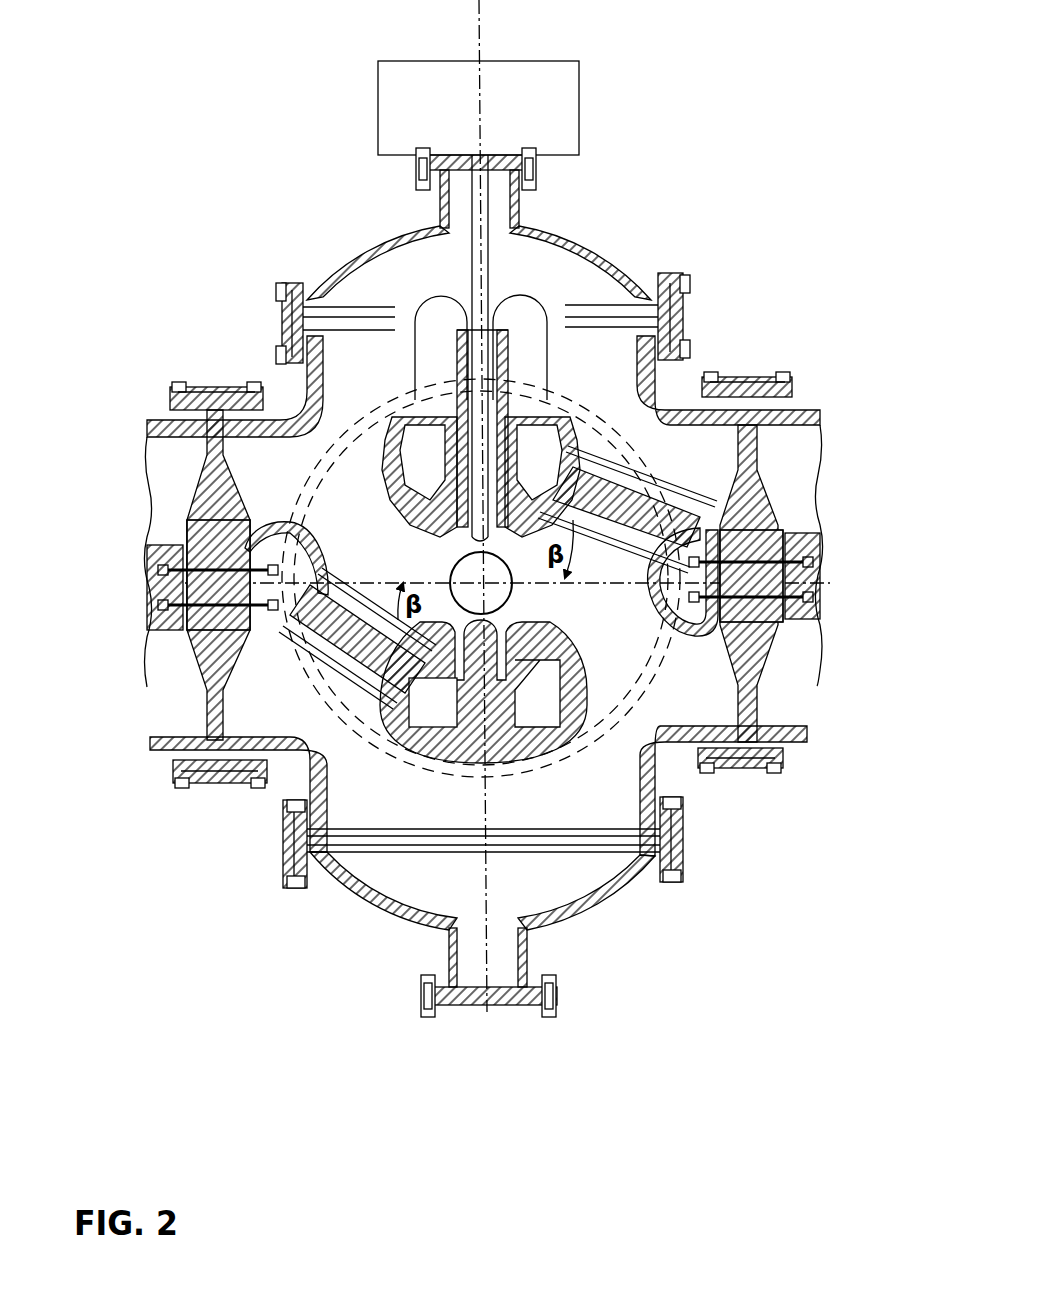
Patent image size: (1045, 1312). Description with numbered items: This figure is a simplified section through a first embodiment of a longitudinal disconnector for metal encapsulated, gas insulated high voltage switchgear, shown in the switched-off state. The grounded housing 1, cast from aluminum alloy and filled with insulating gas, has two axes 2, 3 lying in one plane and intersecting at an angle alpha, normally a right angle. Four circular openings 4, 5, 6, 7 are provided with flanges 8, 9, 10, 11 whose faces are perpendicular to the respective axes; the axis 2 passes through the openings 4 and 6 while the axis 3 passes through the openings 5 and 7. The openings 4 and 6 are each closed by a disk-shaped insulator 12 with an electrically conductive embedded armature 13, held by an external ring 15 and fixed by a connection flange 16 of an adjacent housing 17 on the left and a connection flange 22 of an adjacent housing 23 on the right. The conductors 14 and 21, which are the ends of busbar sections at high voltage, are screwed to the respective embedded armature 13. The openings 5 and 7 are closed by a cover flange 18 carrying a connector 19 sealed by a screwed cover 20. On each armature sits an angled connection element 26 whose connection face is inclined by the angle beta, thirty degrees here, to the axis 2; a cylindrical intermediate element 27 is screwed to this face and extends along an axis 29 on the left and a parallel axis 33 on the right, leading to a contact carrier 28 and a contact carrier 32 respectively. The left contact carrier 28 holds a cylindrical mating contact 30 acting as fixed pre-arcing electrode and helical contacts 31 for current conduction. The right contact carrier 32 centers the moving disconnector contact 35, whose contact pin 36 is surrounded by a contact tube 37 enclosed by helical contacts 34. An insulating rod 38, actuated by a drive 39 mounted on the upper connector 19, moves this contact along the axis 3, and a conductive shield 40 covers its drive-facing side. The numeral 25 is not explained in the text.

The housing 1 is at (913, 969).
The axis 2 is at (847, 576).
The axis 3 is at (478, 14).
The opening 4 is at (204, 562).
The opening 5 is at (599, 351).
The opening 6 is at (762, 569).
The opening 7 is at (483, 820).
The flange 8 is at (150, 369).
The flange 9 is at (680, 337).
The flange 10 is at (825, 839).
The flange 11 is at (283, 827).
The insulator 12 is at (218, 481).
The embedded armature 13 is at (195, 528).
The conductor 14 is at (162, 553).
The external ring 15 is at (680, 307).
The connection flange 16 is at (124, 820).
The adjacent housing 17 is at (164, 749).
The cover flange 18 is at (617, 253).
The connector 19 is at (679, 578).
The screwed cover 20 is at (667, 640).
The conductor 21 is at (813, 614).
The connection flange 22 is at (775, 780).
The adjacent housing 23 is at (800, 734).
The pivot point 25 is at (481, 583).
The angled connection element 26 is at (345, 655).
The intermediate element 27 is at (360, 672).
The contact carrier 28 is at (572, 696).
The axis 29 is at (352, 684).
The mating contact 30 is at (607, 582).
The helical contacts 31 is at (584, 654).
The contact carrier 32 is at (795, 410).
The axis 33 is at (812, 437).
The helical contacts 34 is at (388, 513).
The moving disconnector contact 35 is at (543, 402).
The contact pin 36 is at (280, 408).
The contact tube 37 is at (253, 305).
The insulating rod 38 is at (270, 333).
The drive 39 is at (425, 80).
The shield 40 is at (300, 290).